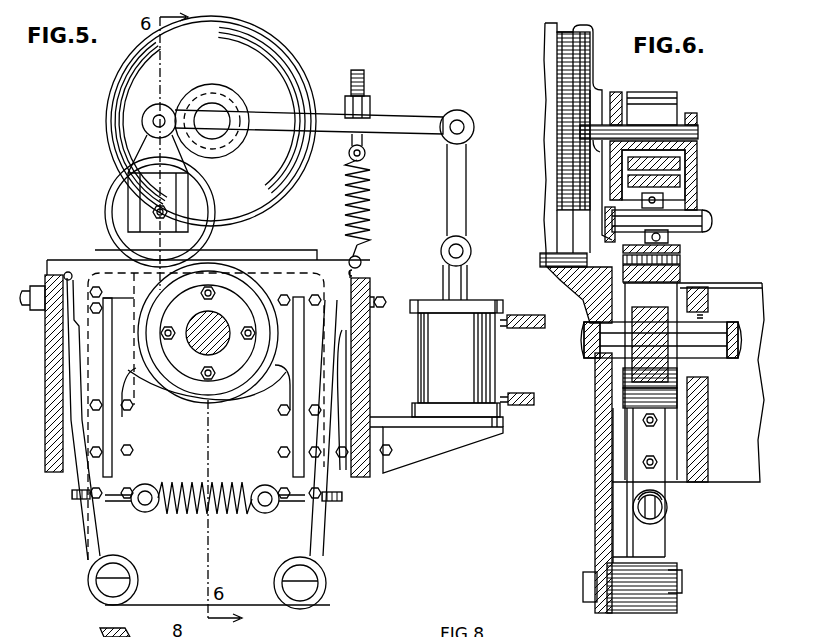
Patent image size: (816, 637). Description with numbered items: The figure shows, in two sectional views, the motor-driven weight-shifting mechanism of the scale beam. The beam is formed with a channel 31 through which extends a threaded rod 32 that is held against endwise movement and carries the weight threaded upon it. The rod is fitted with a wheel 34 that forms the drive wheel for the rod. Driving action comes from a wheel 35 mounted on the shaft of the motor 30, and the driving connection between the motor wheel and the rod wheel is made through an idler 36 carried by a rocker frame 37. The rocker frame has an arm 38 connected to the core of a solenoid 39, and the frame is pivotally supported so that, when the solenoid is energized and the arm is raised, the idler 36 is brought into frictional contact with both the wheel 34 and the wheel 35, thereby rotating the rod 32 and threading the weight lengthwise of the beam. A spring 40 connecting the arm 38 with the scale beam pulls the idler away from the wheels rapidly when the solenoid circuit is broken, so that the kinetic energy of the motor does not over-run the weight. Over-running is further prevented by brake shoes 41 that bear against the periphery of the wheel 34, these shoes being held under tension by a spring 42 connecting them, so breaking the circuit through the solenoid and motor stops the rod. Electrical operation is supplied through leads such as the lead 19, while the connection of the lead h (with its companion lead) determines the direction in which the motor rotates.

In FIG. 5, the motor 30 is at (276, 62).
In FIG. 6, the motor 30 is at (548, 60).
In FIG. 5, the wheel 35 is at (238, 150).
In FIG. 6, the wheel 35 is at (672, 112).
In FIG. 5, the rocker frame 37 is at (145, 161).
In FIG. 6, the rocker frame 37 is at (698, 176).
In FIG. 5, the idler 36 is at (106, 216).
In FIG. 6, the idler 36 is at (690, 165).
In FIG. 5, the arm 38 is at (388, 121).
In FIG. 5, the spring 40 is at (372, 213).
In FIG. 5, the threaded rod 32 is at (222, 328).
In FIG. 6, the threaded rod 32 is at (713, 331).
In FIG. 5, the solenoid 39 is at (482, 360).
In FIG. 5, the lead h is at (524, 318).
In FIG. 5, the lead 19 is at (524, 389).
In FIG. 5, the wheel 34 is at (233, 395).
In FIG. 6, the wheel 34 is at (677, 293).
In FIG. 5, the brake shoes 41 is at (127, 367).
In FIG. 6, the brake shoes 41 is at (672, 372).
In FIG. 5, the spring 42 is at (232, 518).
In FIG. 6, the spring 42 is at (668, 510).
In FIG. 6, the channel 31 is at (708, 466).